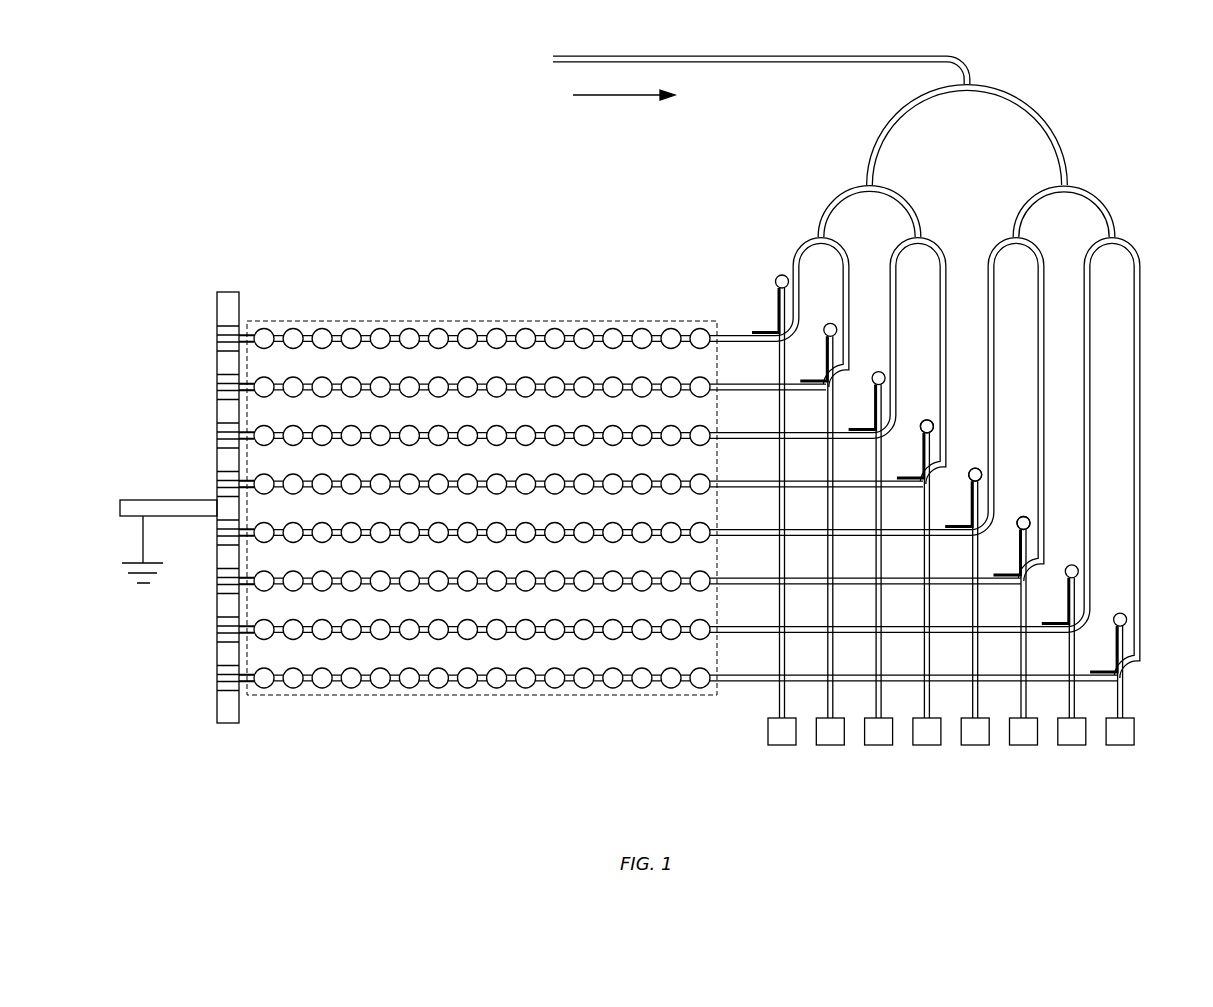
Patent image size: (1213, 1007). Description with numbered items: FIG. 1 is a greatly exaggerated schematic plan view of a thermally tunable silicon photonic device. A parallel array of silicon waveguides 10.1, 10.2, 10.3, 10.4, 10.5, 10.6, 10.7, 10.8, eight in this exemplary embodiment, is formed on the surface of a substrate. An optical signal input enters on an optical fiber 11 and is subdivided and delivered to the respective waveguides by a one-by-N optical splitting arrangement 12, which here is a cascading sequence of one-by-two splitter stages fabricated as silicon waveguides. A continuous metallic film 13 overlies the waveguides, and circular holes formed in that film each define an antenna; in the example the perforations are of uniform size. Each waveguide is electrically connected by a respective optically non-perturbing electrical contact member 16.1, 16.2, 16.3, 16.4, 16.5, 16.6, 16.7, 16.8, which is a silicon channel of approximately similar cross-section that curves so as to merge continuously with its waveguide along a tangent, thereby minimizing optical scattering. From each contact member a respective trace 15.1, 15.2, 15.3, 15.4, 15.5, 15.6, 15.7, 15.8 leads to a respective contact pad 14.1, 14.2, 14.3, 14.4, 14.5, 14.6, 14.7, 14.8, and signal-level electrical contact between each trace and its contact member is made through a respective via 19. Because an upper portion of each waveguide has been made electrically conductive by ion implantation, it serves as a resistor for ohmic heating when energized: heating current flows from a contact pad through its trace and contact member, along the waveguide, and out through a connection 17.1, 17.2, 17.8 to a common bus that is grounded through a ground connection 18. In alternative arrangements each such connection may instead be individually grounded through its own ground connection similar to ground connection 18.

The silicon waveguide 10.1 is at (727, 331).
The silicon waveguide 10.2 is at (729, 440).
The silicon waveguide 10.3 is at (729, 489).
The silicon waveguide 10.4 is at (729, 538).
The silicon waveguide 10.5 is at (729, 586).
The silicon waveguide 10.6 is at (729, 634).
The silicon waveguide 10.7 is at (740, 683).
The silicon waveguide 10.8 is at (752, 697).
The optical fiber 11 is at (578, 63).
The 1×N optical splitting arrangement 12 is at (885, 83).
The continuous metallic film 13 is at (482, 320).
The contact pad 14.1 is at (782, 746).
The contact pad 14.2 is at (830, 746).
The contact pad 14.3 is at (879, 746).
The contact pad 14.4 is at (927, 746).
The contact pad 14.5 is at (975, 746).
The contact pad 14.6 is at (1024, 746).
The contact pad 14.7 is at (1072, 746).
The contact pad 14.8 is at (1120, 746).
The trace 15.1 is at (779, 377).
The trace 15.2 is at (827, 425).
The trace 15.3 is at (875, 474).
The trace 15.4 is at (924, 522).
The trace 15.5 is at (972, 569).
The trace 15.6 is at (1020, 618).
The trace 15.7 is at (1069, 667).
The trace 15.8 is at (1123, 698).
The optically non-perturbing electrical contact member 16.1 is at (779, 309).
The optically non-perturbing electrical contact member 16.2 is at (827, 357).
The optically non-perturbing electrical contact member 16.3 is at (876, 406).
The optically non-perturbing electrical contact member 16.4 is at (924, 455).
The optically non-perturbing electrical contact member 16.5 is at (972, 503).
The optically non-perturbing electrical contact member 16.6 is at (1020, 551).
The optically non-perturbing electrical contact member 16.7 is at (1069, 600).
The optically non-perturbing electrical contact member 16.8 is at (1123, 668).
The connection 17.1 is at (217, 330).
The connection 17.2 is at (217, 379).
The connection 17.8 is at (217, 673).
The ground connection 18 is at (170, 500).
The via 19 is at (933, 424).